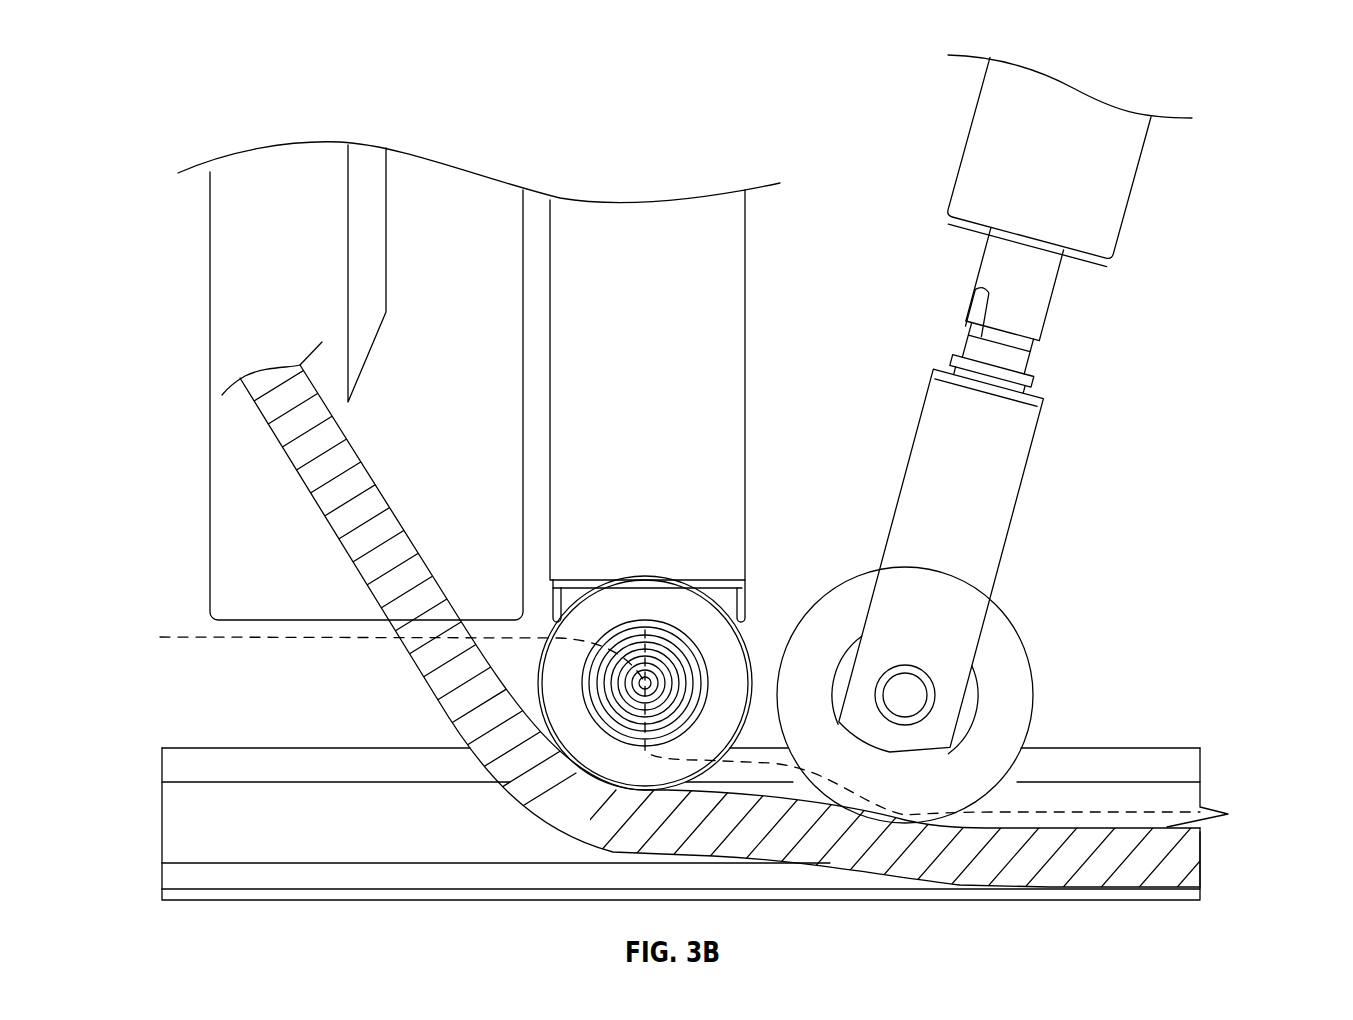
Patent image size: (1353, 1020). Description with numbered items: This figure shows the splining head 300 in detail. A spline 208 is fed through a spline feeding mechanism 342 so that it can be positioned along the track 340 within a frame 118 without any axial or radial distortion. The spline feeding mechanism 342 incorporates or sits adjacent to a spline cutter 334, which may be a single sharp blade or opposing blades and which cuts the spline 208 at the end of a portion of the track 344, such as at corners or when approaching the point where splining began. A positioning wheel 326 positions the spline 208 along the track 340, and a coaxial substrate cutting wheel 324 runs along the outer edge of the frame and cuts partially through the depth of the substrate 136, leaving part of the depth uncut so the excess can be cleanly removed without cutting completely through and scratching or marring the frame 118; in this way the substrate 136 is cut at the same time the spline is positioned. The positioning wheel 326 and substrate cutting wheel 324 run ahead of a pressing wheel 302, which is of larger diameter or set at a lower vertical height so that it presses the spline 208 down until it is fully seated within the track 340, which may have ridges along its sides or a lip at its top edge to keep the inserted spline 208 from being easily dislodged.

The splining head 300 is at (1256, 100).
The spline feeding mechanism 342 is at (208, 266).
The spline cutter 334 is at (367, 303).
The substrate cutting wheel 324 is at (750, 636).
The positioning wheel 326 is at (653, 590).
The pressing wheel 302 is at (1025, 652).
The spline 208 is at (395, 519).
The frame 118 is at (295, 763).
The portion of the track 344 is at (162, 818).
The track 340 is at (395, 833).
The substrate 136 is at (190, 637).